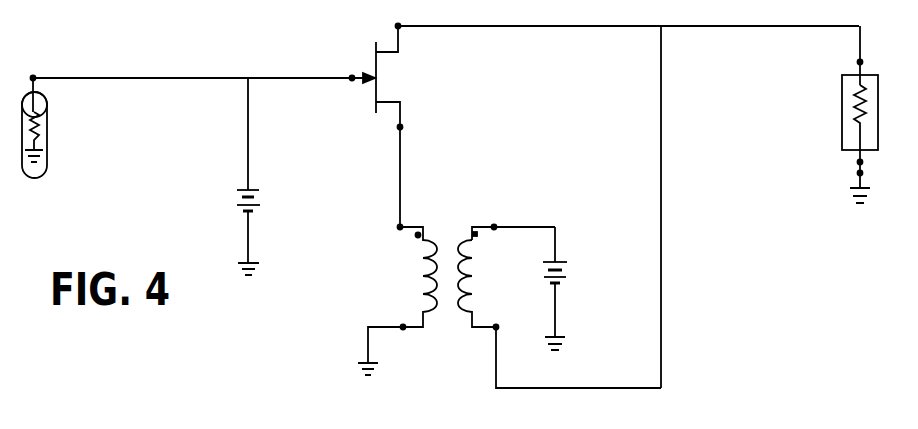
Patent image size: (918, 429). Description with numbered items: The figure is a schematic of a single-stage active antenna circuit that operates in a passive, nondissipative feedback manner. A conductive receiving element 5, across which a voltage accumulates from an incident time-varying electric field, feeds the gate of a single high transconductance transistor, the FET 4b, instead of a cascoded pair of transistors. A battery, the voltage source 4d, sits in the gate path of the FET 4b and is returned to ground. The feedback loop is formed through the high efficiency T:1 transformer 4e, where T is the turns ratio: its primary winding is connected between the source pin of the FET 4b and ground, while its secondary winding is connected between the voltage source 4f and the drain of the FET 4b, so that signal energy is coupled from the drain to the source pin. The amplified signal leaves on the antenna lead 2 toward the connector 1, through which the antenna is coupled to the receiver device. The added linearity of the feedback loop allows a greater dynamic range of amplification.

The connector 1 is at (818, 127).
The antenna lead 2 is at (683, 32).
The receiving element 5 is at (52, 145).
The FET 4b is at (360, 104).
The voltage source 4d is at (262, 199).
The high efficiency T:1 transformer 4e is at (414, 260).
The voltage source 4f is at (560, 268).